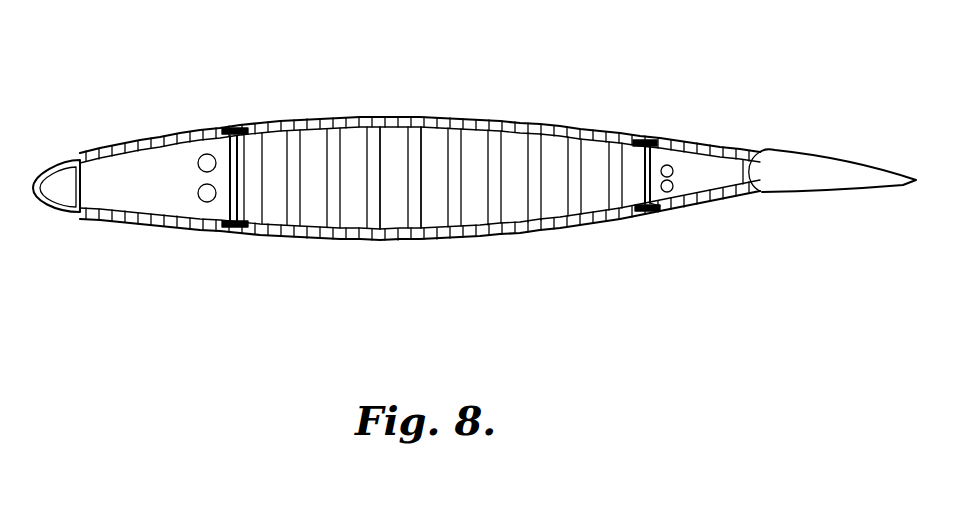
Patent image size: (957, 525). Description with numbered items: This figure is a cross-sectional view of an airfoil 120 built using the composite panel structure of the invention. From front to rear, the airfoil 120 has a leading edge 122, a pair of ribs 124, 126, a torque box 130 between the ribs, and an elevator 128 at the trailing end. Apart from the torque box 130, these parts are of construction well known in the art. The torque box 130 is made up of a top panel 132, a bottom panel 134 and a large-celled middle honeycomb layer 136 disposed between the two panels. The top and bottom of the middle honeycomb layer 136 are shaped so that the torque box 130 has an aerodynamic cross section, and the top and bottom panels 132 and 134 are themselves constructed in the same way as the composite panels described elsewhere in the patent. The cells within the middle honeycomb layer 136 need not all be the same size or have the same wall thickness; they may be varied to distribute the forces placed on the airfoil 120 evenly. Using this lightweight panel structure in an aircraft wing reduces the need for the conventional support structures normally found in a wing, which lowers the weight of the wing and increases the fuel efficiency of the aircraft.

The airfoil 120 is at (558, 78).
The leading edge 122 is at (60, 210).
The rib 124 is at (232, 122).
The rib 126 is at (655, 226).
The elevator 128 is at (811, 157).
The torque box 130 is at (648, 130).
The top panel 132 is at (619, 131).
The bottom panel 134 is at (565, 233).
The middle honeycomb layer 136 is at (395, 208).